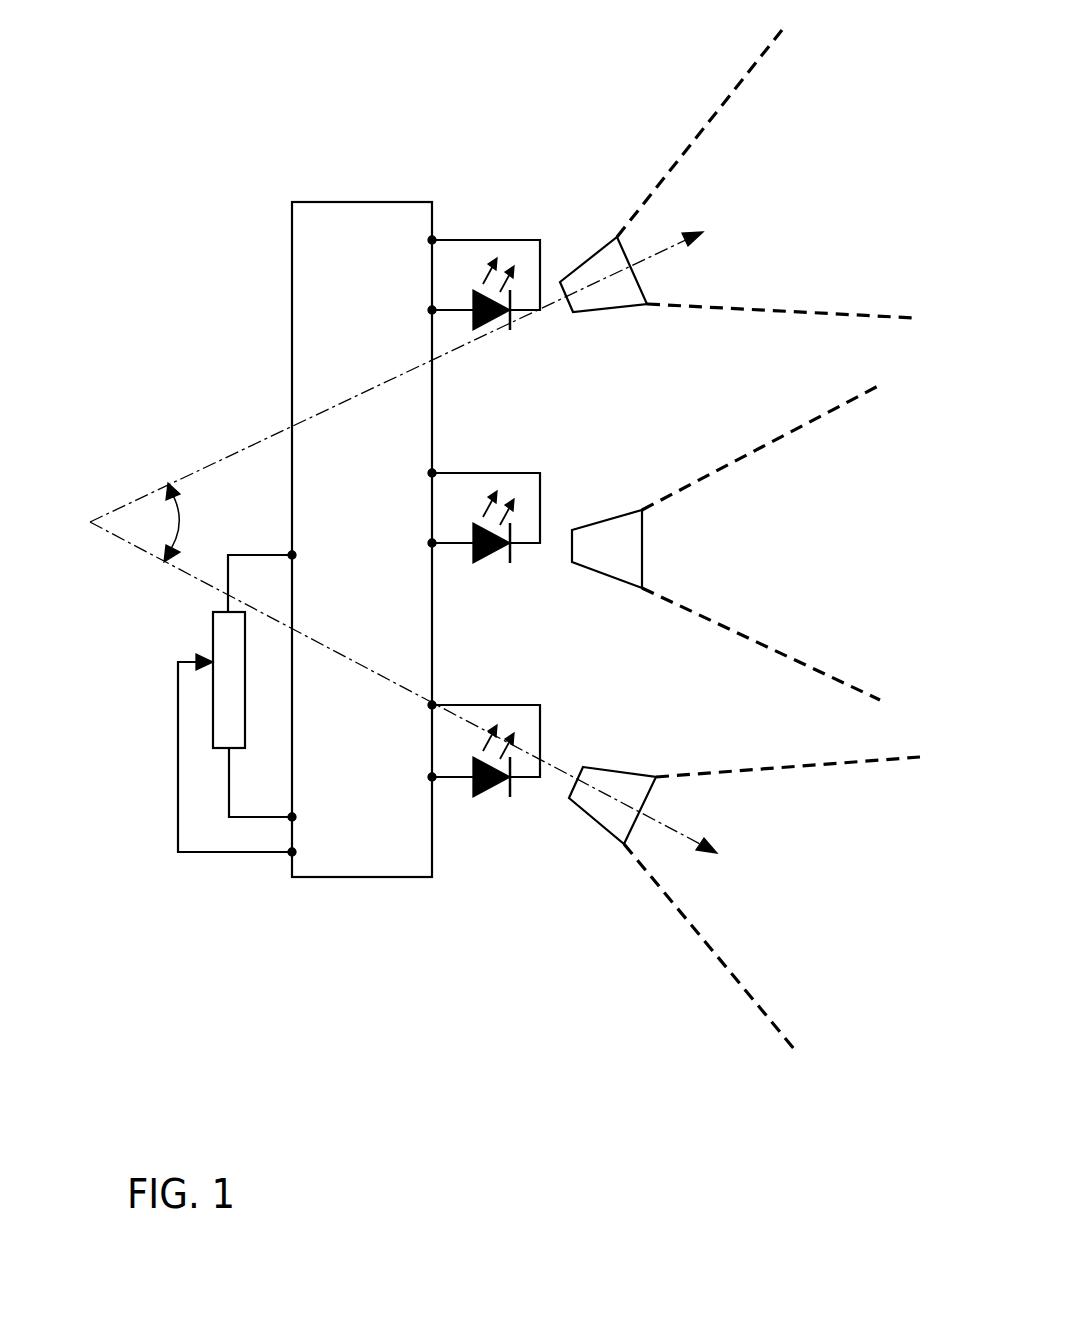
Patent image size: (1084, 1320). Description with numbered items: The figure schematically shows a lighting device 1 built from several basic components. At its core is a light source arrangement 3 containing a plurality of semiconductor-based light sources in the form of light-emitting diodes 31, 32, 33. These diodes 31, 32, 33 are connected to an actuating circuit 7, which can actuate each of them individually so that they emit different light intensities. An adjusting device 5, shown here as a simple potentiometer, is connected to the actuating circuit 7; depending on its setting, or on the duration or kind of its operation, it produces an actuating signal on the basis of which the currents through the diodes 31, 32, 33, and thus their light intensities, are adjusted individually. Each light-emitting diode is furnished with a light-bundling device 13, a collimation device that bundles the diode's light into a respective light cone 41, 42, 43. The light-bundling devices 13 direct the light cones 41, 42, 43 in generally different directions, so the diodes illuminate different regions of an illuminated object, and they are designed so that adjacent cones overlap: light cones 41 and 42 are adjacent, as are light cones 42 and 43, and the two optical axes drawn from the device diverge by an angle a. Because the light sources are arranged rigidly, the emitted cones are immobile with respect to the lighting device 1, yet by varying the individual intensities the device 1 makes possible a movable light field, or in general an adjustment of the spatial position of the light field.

The lighting device 1 is at (100, 114).
The light source arrangement 3 is at (502, 205).
The adjusting device 5 is at (212, 633).
The actuating circuit 7 is at (292, 225).
The light-bundling device 13 is at (584, 258).
The light-emitting diode 31 is at (492, 332).
The light-emitting diode 32 is at (492, 565).
The light-emitting diode 33 is at (492, 800).
The light cone 41 is at (745, 80).
The light cone 42 is at (770, 430).
The light cone 43 is at (730, 975).
The angle between optical axes a is at (403, 542).